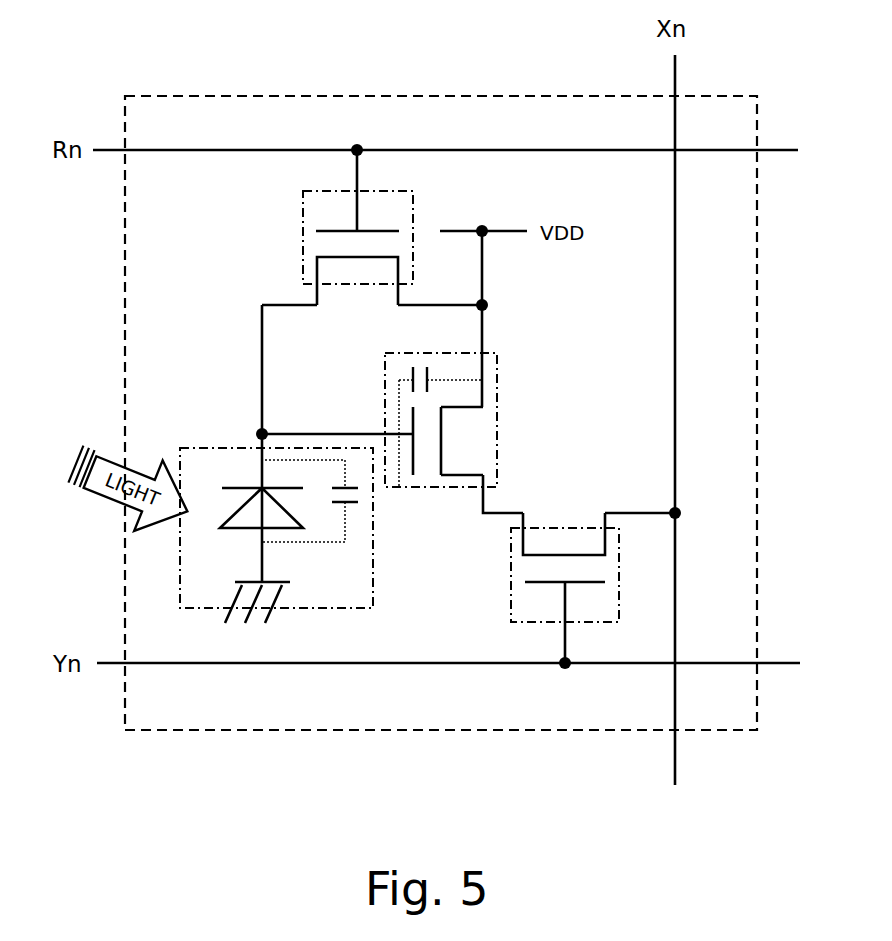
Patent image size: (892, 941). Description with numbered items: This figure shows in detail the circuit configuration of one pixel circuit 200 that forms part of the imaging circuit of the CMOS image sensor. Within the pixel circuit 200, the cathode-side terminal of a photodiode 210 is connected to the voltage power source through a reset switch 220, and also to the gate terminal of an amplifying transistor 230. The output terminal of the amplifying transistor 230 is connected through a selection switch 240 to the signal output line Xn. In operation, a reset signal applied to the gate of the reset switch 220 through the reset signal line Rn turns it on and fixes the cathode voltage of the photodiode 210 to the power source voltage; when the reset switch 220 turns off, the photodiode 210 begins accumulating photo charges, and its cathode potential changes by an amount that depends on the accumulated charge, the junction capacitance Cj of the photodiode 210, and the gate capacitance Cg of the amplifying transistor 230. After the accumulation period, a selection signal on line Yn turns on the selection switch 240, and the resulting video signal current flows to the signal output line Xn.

The pixel circuit 200 is at (356, 95).
The photodiode 210 is at (215, 447).
The reset switch 220 is at (298, 222).
The amplifying transistor 230 is at (380, 390).
The selection switch 240 is at (590, 527).